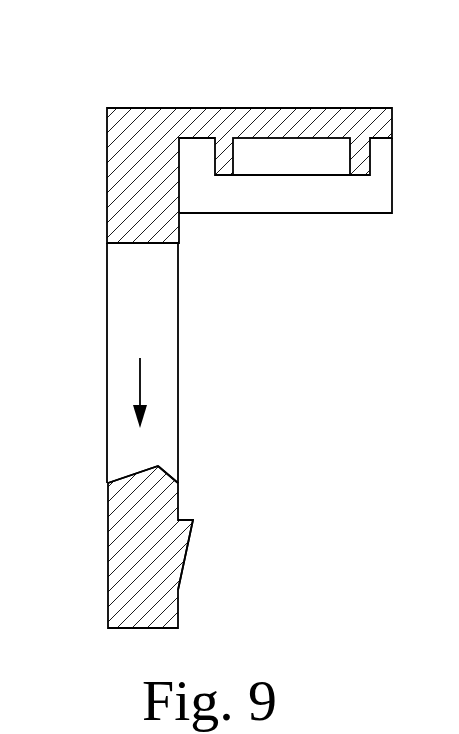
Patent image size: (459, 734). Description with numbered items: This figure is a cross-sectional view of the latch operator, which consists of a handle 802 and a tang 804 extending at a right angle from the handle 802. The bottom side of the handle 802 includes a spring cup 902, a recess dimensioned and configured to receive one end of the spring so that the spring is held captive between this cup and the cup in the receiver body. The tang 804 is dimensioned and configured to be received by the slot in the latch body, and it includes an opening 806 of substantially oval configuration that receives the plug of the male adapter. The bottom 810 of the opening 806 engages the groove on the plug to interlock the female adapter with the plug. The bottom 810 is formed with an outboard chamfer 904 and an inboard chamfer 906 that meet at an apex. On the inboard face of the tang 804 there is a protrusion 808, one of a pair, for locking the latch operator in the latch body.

The handle 802 is at (322, 108).
The spring cup 902 is at (283, 138).
The opening 806 is at (163, 285).
The bottom of the opening 810 is at (140, 380).
The outboard chamfer 904 is at (137, 472).
The inboard chamfer 906 is at (168, 480).
The tang 804 is at (107, 565).
The protrusion 808 is at (185, 558).